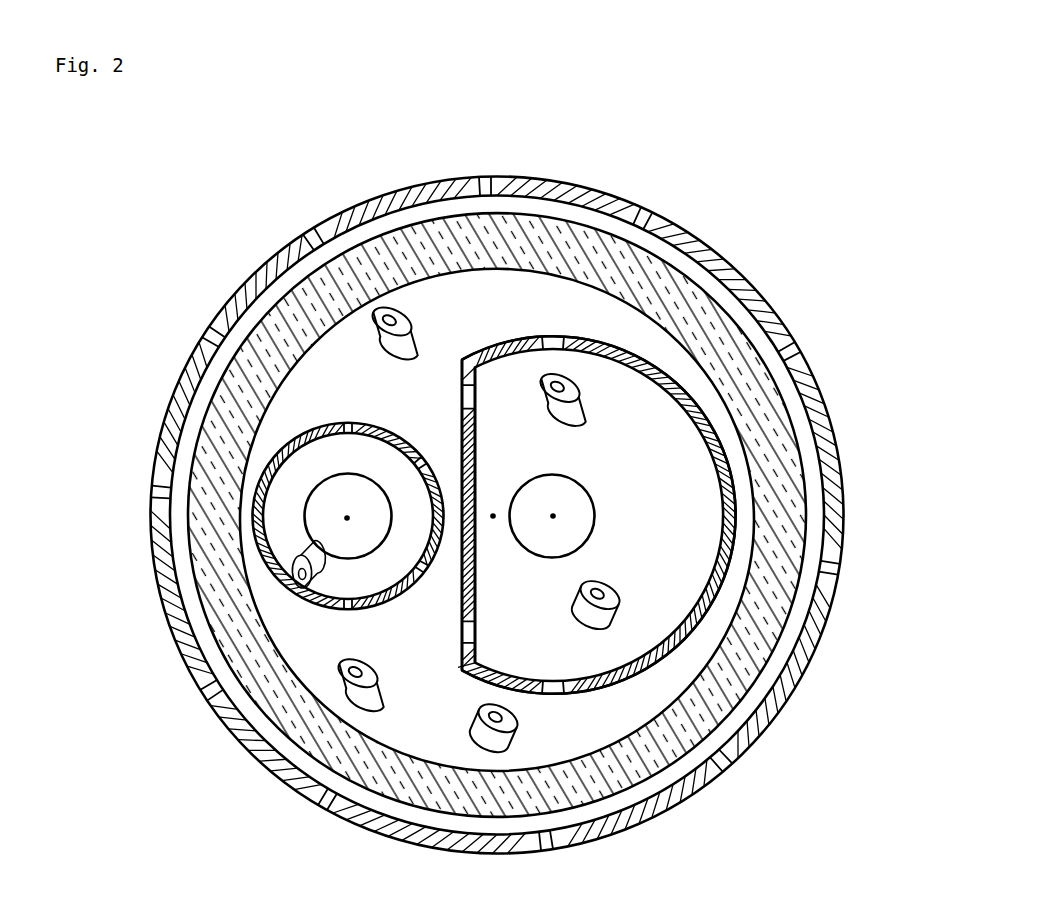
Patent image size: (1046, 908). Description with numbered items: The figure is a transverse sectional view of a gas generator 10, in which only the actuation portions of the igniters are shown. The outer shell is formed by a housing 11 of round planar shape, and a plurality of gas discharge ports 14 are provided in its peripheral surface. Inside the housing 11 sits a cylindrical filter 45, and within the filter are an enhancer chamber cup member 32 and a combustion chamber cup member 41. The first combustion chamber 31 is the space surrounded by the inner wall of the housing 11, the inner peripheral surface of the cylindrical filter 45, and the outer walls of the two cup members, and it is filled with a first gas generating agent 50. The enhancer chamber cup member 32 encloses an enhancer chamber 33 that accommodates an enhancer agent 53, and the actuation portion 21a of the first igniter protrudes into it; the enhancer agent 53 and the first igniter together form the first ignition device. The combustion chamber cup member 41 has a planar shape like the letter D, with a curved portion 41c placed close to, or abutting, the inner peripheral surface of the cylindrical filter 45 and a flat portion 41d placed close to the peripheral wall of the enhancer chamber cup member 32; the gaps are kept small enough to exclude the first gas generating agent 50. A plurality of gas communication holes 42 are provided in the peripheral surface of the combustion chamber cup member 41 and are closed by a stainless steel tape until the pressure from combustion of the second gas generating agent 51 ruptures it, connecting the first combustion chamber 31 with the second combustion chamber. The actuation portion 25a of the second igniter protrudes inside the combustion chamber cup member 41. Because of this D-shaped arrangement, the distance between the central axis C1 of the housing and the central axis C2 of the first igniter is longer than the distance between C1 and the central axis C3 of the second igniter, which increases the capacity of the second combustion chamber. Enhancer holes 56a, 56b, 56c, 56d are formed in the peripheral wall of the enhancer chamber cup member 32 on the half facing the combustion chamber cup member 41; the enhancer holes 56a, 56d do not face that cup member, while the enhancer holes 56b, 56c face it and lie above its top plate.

The gas generator 10 is at (400, 158).
The housing 11 is at (825, 421).
The gas discharge ports 14 is at (210, 696).
The cylindrical filter 45 is at (730, 326).
The combustion chamber cup member 41 is at (733, 605).
The curved portion 41c is at (736, 507).
The flat portion 41d is at (486, 600).
The gas communication holes 42 is at (553, 332).
The actuation portion 25a is at (594, 513).
The first combustion chamber 31 is at (496, 295).
The enhancer chamber cup member 32 is at (298, 435).
The enhancer chamber 33 is at (361, 470).
The actuation portion 21a is at (352, 550).
The first gas generating agent 50 is at (416, 330).
The second gas generating agent 51 is at (582, 400).
The enhancer agent 53 is at (305, 588).
The enhancer hole 56a is at (352, 609).
The enhancer hole 56b is at (423, 573).
The enhancer hole 56c is at (430, 454).
The enhancer hole 56d is at (352, 422).
The central axis of the housing C1 is at (494, 503).
The central axis of the first igniter C2 is at (347, 504).
The central axis of the second igniter C3 is at (553, 503).